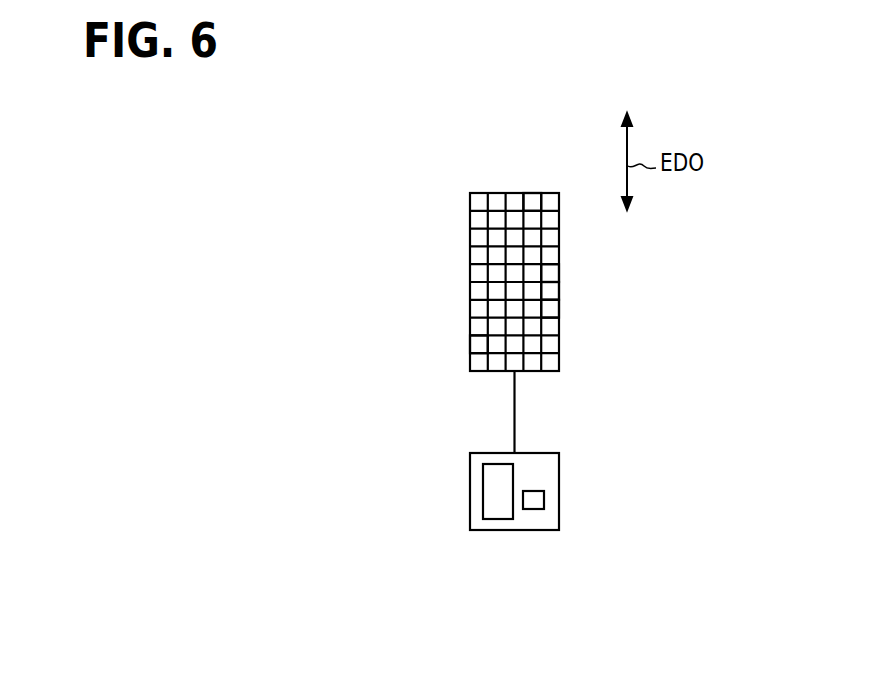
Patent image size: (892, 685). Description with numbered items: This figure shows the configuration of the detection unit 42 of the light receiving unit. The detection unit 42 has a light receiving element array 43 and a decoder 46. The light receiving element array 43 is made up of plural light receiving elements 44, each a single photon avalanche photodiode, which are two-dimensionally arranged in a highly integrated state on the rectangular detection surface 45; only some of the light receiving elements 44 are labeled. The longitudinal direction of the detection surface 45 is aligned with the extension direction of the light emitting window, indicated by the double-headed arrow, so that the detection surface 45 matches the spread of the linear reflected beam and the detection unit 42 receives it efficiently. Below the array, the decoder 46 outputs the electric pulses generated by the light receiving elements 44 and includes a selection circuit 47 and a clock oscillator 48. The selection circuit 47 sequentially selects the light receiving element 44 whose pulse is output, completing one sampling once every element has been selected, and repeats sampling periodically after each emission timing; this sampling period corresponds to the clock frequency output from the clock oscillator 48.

The detection unit 42 is at (398, 370).
The light receiving element array 43 is at (510, 268).
The light receiving element 44 is at (531, 192).
The detection surface 45 is at (476, 193).
The decoder 46 is at (481, 510).
The selection circuit 47 is at (495, 530).
The clock oscillator 48 is at (531, 509).